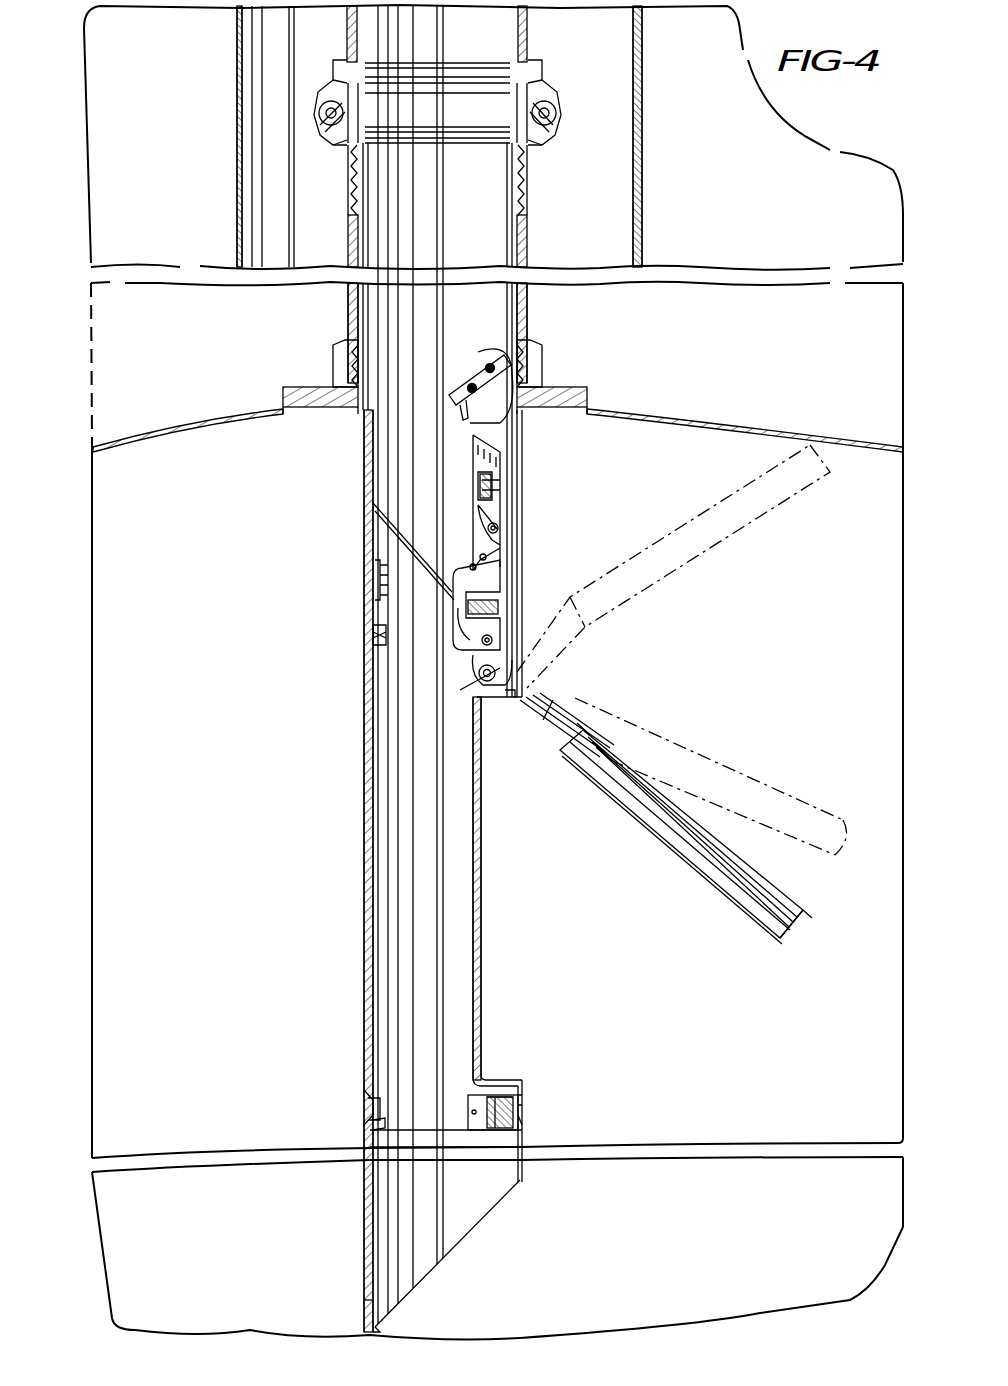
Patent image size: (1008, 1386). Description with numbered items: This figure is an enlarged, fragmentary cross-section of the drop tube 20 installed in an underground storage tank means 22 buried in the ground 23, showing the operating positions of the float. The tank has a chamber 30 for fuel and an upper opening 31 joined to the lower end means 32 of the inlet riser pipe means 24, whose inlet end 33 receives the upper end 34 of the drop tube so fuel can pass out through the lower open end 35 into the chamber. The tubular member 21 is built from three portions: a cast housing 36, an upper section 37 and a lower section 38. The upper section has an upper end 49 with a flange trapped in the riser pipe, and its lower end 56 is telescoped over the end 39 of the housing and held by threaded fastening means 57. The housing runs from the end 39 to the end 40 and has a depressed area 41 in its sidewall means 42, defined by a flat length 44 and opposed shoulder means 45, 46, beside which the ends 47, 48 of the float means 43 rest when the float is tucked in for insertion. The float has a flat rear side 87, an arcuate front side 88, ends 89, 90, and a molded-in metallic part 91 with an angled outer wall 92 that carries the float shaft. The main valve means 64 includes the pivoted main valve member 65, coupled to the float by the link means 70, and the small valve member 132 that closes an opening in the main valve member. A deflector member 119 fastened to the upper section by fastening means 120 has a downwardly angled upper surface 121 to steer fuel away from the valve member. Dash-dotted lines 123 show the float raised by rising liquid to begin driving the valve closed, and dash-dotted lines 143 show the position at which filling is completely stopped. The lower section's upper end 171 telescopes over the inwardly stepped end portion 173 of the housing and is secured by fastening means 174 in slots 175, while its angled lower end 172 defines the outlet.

The drop tube 20 is at (360, 738).
The tubular member 21 is at (356, 452).
The storage tank means 22 is at (224, 418).
The ground 23 is at (100, 303).
The inlet riser pipe means 24 is at (640, 50).
The chamber 30 is at (208, 798).
The upper opening 31 is at (357, 424).
The lower end means 32 is at (340, 368).
The inlet end 33 is at (525, 160).
The upper end 34 is at (484, 143).
The lower open end 35 is at (482, 1220).
The housing 36 is at (370, 797).
The upper section 37 is at (350, 303).
The lower section 38 is at (525, 1170).
The end 39 is at (368, 558).
The end 40 is at (520, 1100).
The depressed area 41 is at (484, 873).
The sidewall means 42 is at (372, 862).
The float means 43 is at (672, 852).
The flat length 44 is at (482, 824).
The shoulder means 45 is at (518, 685).
The shoulder means 46 is at (505, 1097).
The end 47 is at (523, 712).
The end 48 is at (807, 918).
The upper end 49 is at (510, 160).
The lower end 56 is at (372, 596).
The threaded fastening means 57 is at (365, 637).
The main valve means 64 is at (508, 462).
The main valve member 65 is at (503, 512).
The link means 70 is at (448, 632).
The flat rear side 87 is at (732, 898).
The arcuate front side 88 is at (745, 858).
The end 89 is at (787, 947).
The end 90 is at (562, 748).
The metallic part 91 is at (565, 715).
The angled outer wall 92 is at (577, 722).
The deflector member 119 is at (512, 423).
The fastening means 120 is at (497, 358).
The upper surface 121 is at (462, 412).
The dash-dotted lines 123 is at (780, 800).
The valve member 132 is at (505, 487).
The dash-dotted lines 143 is at (738, 488).
The upper end 171 is at (522, 1120).
The lower end 172 is at (360, 1302).
The inwardly stepped end portion 173 is at (524, 1104).
The fastening means 174 is at (358, 1118).
The slots 175 is at (495, 1122).